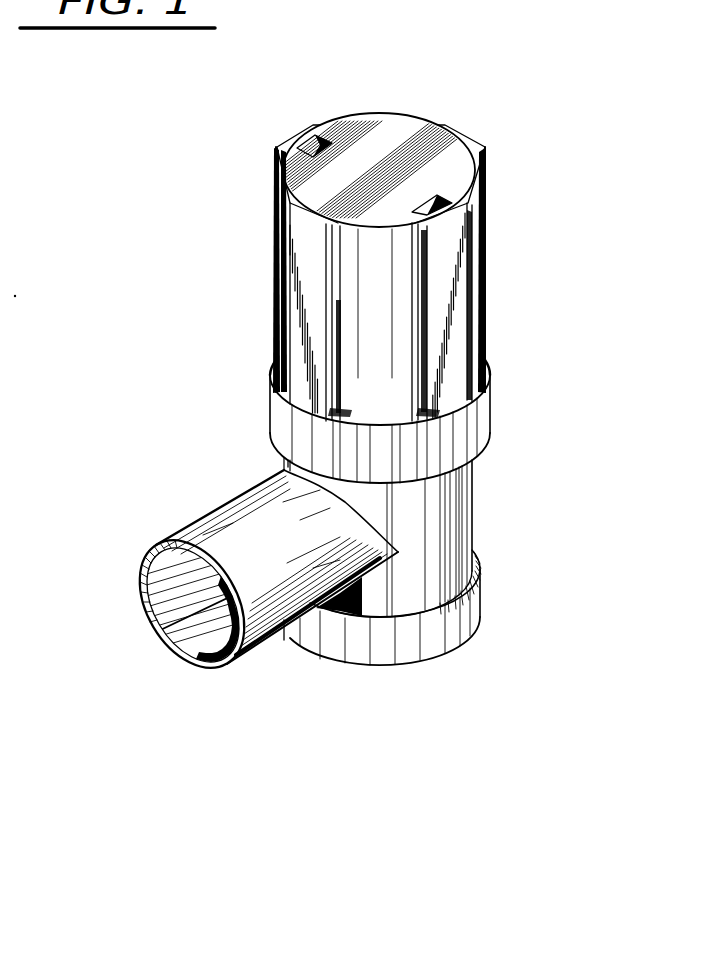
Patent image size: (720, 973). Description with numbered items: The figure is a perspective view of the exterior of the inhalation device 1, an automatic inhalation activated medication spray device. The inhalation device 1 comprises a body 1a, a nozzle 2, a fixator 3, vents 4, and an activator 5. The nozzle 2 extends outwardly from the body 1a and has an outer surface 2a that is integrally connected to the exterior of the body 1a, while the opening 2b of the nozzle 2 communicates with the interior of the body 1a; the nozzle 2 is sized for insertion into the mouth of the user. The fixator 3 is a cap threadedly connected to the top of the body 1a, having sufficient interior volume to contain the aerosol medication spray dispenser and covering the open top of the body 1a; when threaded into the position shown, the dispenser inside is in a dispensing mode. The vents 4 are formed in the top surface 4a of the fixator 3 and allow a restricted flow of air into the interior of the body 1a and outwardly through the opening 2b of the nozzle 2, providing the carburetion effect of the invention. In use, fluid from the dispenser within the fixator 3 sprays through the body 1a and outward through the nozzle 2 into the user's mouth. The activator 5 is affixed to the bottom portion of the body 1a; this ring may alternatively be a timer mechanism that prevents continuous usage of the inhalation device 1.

The inhalation device 1 is at (520, 203).
The body 1a is at (473, 490).
The nozzle 2 is at (173, 598).
The outer surface 2a is at (213, 520).
The opening 2b is at (150, 565).
The fixator 3 is at (483, 272).
The vents 4 is at (320, 140).
The top surface 4a is at (458, 140).
The activator 5 is at (483, 622).